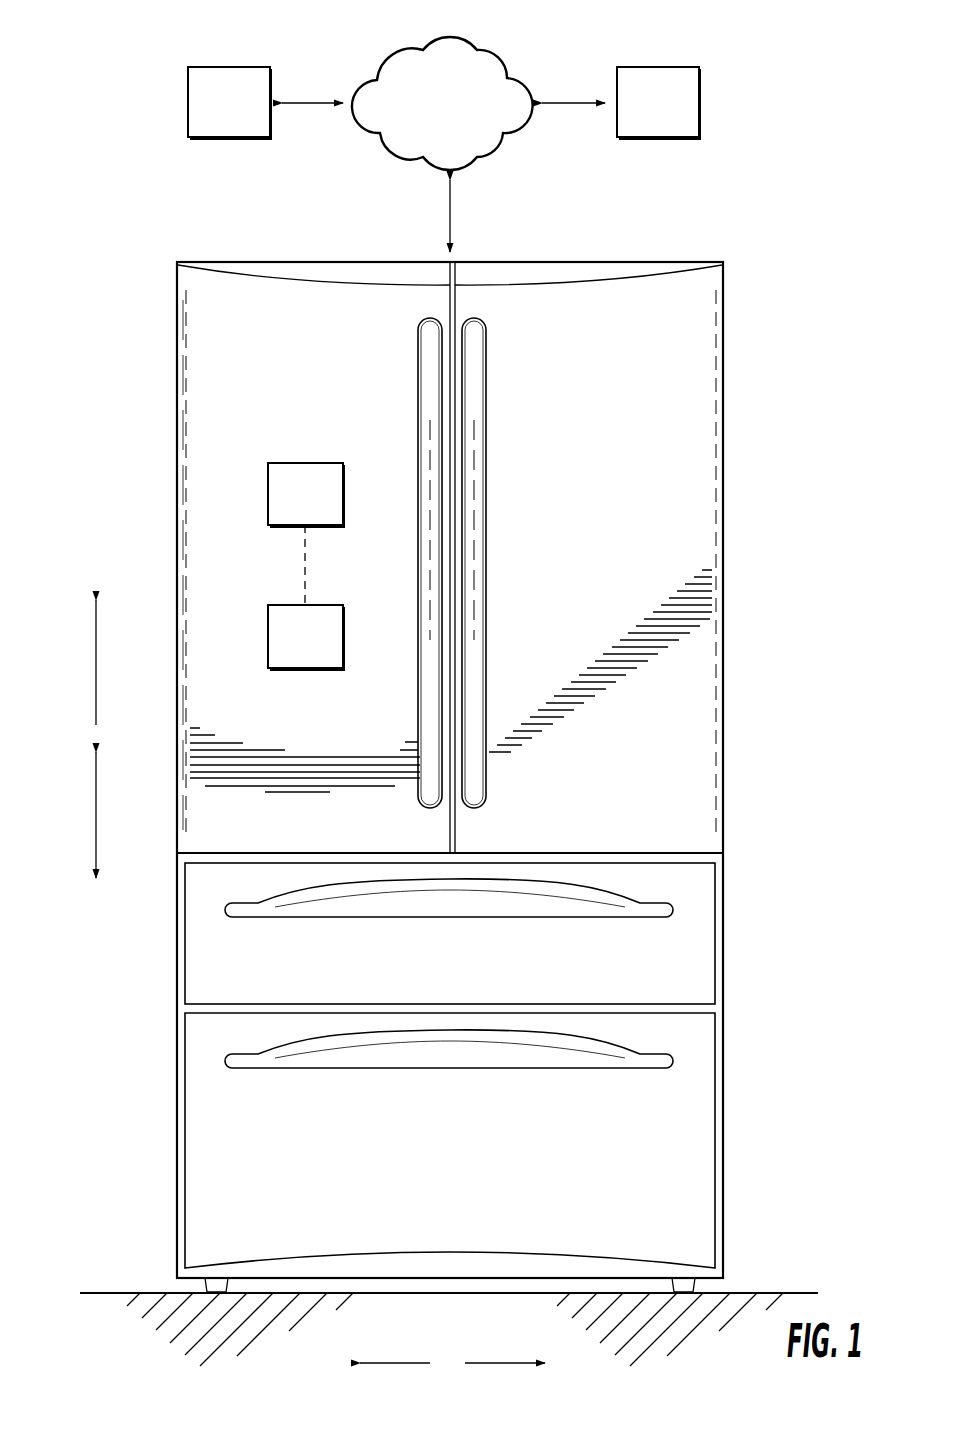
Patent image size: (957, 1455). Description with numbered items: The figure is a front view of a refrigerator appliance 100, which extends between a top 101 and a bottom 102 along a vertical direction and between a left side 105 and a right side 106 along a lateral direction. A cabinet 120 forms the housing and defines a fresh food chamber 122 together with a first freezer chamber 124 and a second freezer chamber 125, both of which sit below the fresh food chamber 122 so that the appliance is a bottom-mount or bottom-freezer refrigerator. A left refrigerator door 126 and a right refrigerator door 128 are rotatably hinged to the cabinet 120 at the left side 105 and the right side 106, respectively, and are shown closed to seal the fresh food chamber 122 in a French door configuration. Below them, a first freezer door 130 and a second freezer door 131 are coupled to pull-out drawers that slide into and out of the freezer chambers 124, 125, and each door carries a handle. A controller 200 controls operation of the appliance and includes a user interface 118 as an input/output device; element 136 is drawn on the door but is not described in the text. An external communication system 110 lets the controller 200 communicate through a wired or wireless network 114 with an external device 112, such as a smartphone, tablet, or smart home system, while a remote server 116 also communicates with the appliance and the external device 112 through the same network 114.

The refrigerator appliance 100 is at (164, 180).
The top 101 is at (740, 262).
The bottom 102 is at (740, 1275).
The left side 105 is at (178, 250).
The right side 106 is at (718, 244).
The external communication system 110 is at (325, 46).
The external device 112 is at (675, 117).
The network 114 is at (460, 117).
The remote server 116 is at (248, 117).
The user interface 118 is at (325, 506).
The cabinet 120 is at (178, 1093).
The fresh food chamber 122 is at (680, 545).
The first freezer chamber 124 is at (497, 929).
The second freezer chamber 125 is at (497, 1139).
The left refrigerator door 126 is at (267, 565).
The right refrigerator door 128 is at (685, 418).
The first freezer door 130 is at (678, 890).
The second freezer door 131 is at (678, 1042).
The door panel 136 is at (235, 540).
The controller 200 is at (325, 646).